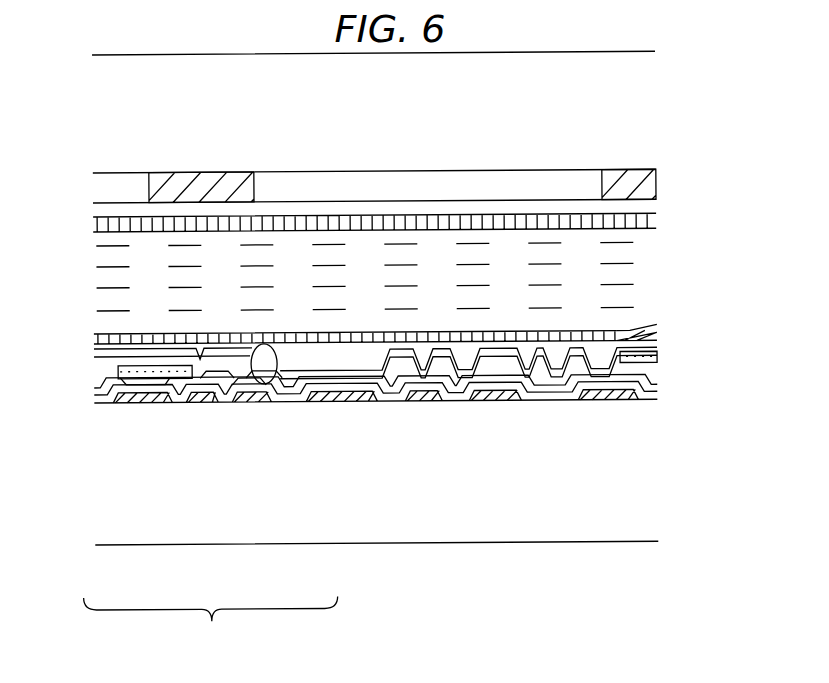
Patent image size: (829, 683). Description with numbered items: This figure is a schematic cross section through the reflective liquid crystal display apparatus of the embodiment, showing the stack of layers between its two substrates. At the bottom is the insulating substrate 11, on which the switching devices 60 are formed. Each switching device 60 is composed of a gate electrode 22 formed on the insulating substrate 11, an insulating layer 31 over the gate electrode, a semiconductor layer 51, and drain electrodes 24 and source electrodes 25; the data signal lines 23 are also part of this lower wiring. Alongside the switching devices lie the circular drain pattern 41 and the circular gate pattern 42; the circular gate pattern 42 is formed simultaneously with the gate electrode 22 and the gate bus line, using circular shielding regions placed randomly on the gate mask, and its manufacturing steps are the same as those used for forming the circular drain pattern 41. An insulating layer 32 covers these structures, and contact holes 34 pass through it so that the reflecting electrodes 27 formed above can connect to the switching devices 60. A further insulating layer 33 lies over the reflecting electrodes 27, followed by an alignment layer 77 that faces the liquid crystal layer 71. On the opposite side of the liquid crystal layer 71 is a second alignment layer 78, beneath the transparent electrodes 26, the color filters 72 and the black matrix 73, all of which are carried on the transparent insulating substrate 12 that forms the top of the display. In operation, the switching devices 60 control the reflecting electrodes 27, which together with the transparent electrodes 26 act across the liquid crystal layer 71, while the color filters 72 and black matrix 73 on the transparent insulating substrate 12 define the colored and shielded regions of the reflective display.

The insulating substrate 11 is at (640, 470).
The transparent insulating substrate 12 is at (125, 123).
The gate electrode 22 is at (205, 390).
The data signal line 23 is at (124, 398).
The drain electrode 24 is at (155, 388).
The source electrode 25 is at (260, 385).
The transparent electrode 26 is at (105, 207).
The reflecting electrode 27 is at (660, 372).
The insulating layer 31 is at (245, 388).
The insulating layer 32 is at (112, 383).
The insulating layer 33 is at (658, 347).
The contact hole 34 is at (270, 374).
The circular drain pattern 41 is at (509, 392).
The circular gate pattern 42 is at (598, 396).
The semiconductor layer 51 is at (218, 385).
The switching device 60 is at (211, 629).
The liquid crystal layer 71 is at (112, 298).
The color filter 72 is at (262, 195).
The black matrix 73 is at (650, 191).
The alignment layer 77 is at (640, 334).
The alignment layer 78 is at (637, 219).